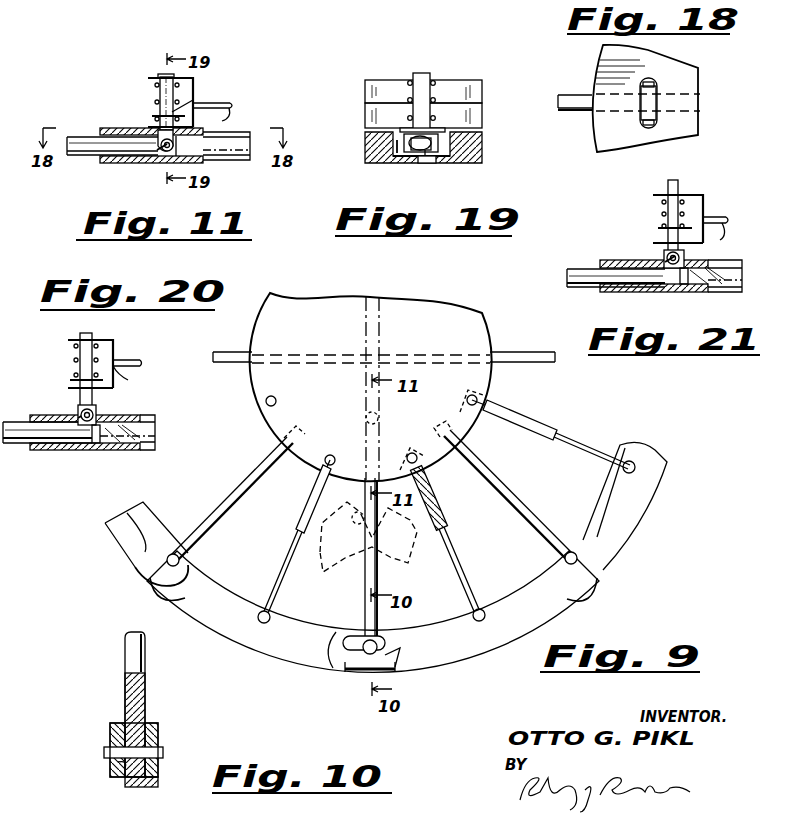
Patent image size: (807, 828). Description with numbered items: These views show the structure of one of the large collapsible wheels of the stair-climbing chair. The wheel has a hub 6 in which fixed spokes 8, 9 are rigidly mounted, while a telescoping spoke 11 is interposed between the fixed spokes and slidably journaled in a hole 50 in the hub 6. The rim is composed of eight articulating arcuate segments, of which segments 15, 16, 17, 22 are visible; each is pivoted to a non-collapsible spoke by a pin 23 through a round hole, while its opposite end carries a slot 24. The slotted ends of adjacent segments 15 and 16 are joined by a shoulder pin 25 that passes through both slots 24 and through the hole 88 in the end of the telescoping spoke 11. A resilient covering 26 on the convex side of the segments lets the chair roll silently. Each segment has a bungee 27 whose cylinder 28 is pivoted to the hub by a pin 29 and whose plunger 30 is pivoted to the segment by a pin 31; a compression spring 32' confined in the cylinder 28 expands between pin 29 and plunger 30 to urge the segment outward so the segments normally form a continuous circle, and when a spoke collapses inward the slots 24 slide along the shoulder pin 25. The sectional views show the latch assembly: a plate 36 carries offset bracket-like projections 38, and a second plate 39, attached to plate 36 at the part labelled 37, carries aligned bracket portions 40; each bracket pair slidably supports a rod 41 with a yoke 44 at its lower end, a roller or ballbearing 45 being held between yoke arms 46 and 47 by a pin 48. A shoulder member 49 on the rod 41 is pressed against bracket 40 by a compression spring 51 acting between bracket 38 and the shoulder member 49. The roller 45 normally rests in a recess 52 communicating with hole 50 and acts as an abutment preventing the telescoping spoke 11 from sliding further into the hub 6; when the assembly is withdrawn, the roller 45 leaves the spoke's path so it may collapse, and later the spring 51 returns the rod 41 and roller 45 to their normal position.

In FIG. 11, the hub 6 is at (250, 161).
In FIG. 19, the hub 6 is at (462, 165).
In FIG. 18, the hub 6 is at (700, 84).
In FIG. 21, the hub 6 is at (744, 280).
In FIG. 20, the hub 6 is at (157, 437).
In FIG. 9, the hub 6 is at (486, 328).
In FIG. 9, the fixed spoke 8 is at (208, 522).
In FIG. 9, the fixed spoke 9 is at (523, 510).
In FIG. 11, the telescoping spoke 11 is at (70, 158).
In FIG. 19, the telescoping spoke 11 is at (430, 160).
In FIG. 18, the telescoping spoke 11 is at (566, 111).
In FIG. 21, the telescoping spoke 11 is at (578, 289).
In FIG. 20, the telescoping spoke 11 is at (14, 446).
In FIG. 10, the telescoping spoke 11 is at (146, 674).
In FIG. 9, the telescoping spoke 11 is at (365, 589).
In FIG. 10, the arcuate rim segment 15 is at (160, 730).
In FIG. 9, the arcuate rim segment 15 is at (470, 660).
In FIG. 10, the arcuate rim segment 16 is at (110, 733).
In FIG. 9, the arcuate rim segment 16 is at (326, 660).
In FIG. 9, the arcuate rim segment 17 is at (138, 570).
In FIG. 9, the arcuate rim segment 22 is at (645, 512).
In FIG. 9, the pin 23 is at (178, 595).
In FIG. 9, the slot 24 is at (341, 668).
In FIG. 10, the shoulder pin 25 is at (104, 752).
In FIG. 9, the shoulder pin 25 is at (398, 668).
In FIG. 10, the covering 26 is at (156, 787).
In FIG. 9, the covering 26 is at (264, 655).
In FIG. 9, the bungee 27 is at (292, 540).
In FIG. 9, the cylinder 28 is at (440, 480).
In FIG. 9, the pin 29 is at (480, 398).
In FIG. 9, the plunger 30 is at (466, 560).
In FIG. 9, the pin 31 is at (259, 604).
In FIG. 9, the compression spring 32' is at (439, 482).
In FIG. 11, the plate 36 is at (232, 103).
In FIG. 21, the plate 36 is at (728, 216).
In FIG. 11, the arm 37 is at (196, 104).
In FIG. 21, the arm 37 is at (712, 217).
In FIG. 11, the bracket-like projection 38 is at (152, 78).
In FIG. 19, the bracket-like projection 38 is at (392, 80).
In FIG. 21, the bracket-like projection 38 is at (660, 195).
In FIG. 20, the bracket-like projection 38 is at (70, 341).
In FIG. 11, the second plate 39 is at (233, 112).
In FIG. 21, the second plate 39 is at (724, 230).
In FIG. 20, the second plate 39 is at (128, 378).
In FIG. 11, the bracket portion 40 is at (152, 127).
In FIG. 21, the bracket portion 40 is at (656, 243).
In FIG. 20, the bracket portion 40 is at (70, 388).
In FIG. 11, the rod 41 is at (160, 92).
In FIG. 19, the rod 41 is at (428, 73).
In FIG. 21, the rod 41 is at (668, 213).
In FIG. 20, the rod 41 is at (80, 352).
In FIG. 11, the yoke 44 is at (182, 145).
In FIG. 19, the yoke 44 is at (448, 140).
In FIG. 18, the yoke 44 is at (660, 85).
In FIG. 21, the yoke 44 is at (664, 255).
In FIG. 20, the yoke 44 is at (97, 405).
In FIG. 11, the roller or ballbearing 45 is at (164, 158).
In FIG. 19, the roller or ballbearing 45 is at (412, 150).
In FIG. 18, the roller or ballbearing 45 is at (665, 118).
In FIG. 21, the roller or ballbearing 45 is at (682, 264).
In FIG. 20, the roller or ballbearing 45 is at (96, 422).
In FIG. 19, the yoke arm 46 is at (396, 152).
In FIG. 19, the yoke arm 47 is at (470, 152).
In FIG. 11, the pin 48 is at (158, 151).
In FIG. 21, the pin 48 is at (666, 264).
In FIG. 20, the pin 48 is at (78, 416).
In FIG. 11, the shoulder member 49 is at (158, 116).
In FIG. 19, the shoulder member 49 is at (458, 130).
In FIG. 21, the shoulder member 49 is at (660, 228).
In FIG. 20, the shoulder member 49 is at (72, 380).
In FIG. 11, the hole 50 is at (196, 150).
In FIG. 21, the hole 50 is at (722, 272).
In FIG. 20, the hole 50 is at (138, 428).
In FIG. 11, the compression spring 51 is at (200, 84).
In FIG. 19, the compression spring 51 is at (440, 85).
In FIG. 21, the compression spring 51 is at (684, 199).
In FIG. 20, the compression spring 51 is at (104, 343).
In FIG. 19, the recess 52 is at (438, 163).
In FIG. 21, the recess 52 is at (680, 288).
In FIG. 20, the recess 52 is at (97, 444).
In FIG. 10, the hole 88 is at (120, 765).